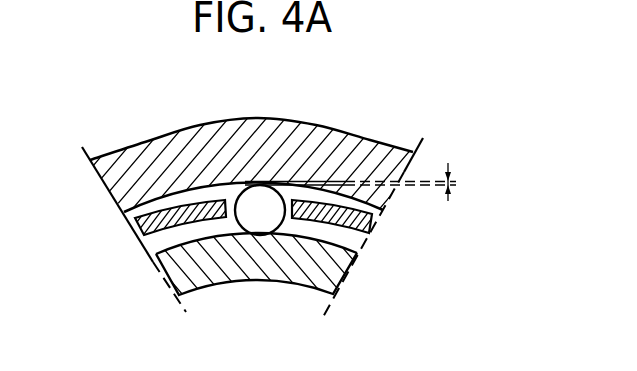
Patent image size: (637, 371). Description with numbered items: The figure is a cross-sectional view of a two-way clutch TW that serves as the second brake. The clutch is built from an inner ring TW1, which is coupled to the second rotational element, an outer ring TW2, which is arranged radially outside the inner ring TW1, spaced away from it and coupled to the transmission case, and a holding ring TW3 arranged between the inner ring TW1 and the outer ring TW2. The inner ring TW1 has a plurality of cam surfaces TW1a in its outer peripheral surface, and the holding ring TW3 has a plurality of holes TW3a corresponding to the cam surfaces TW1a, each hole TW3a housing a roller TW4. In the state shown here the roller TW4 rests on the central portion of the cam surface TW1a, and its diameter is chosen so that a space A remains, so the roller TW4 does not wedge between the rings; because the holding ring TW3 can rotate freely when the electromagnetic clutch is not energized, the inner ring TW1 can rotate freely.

The two-way clutch TW is at (132, 113).
The outer ring TW2 is at (367, 130).
The holding ring TW3 is at (135, 222).
The cam surface TW1a is at (308, 208).
The roller TW4 is at (252, 203).
The inner ring TW1 is at (284, 281).
The hole TW3a is at (248, 236).
The space A is at (455, 183).